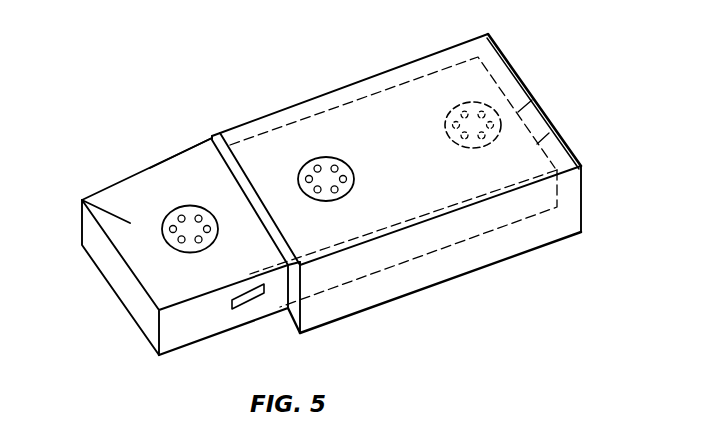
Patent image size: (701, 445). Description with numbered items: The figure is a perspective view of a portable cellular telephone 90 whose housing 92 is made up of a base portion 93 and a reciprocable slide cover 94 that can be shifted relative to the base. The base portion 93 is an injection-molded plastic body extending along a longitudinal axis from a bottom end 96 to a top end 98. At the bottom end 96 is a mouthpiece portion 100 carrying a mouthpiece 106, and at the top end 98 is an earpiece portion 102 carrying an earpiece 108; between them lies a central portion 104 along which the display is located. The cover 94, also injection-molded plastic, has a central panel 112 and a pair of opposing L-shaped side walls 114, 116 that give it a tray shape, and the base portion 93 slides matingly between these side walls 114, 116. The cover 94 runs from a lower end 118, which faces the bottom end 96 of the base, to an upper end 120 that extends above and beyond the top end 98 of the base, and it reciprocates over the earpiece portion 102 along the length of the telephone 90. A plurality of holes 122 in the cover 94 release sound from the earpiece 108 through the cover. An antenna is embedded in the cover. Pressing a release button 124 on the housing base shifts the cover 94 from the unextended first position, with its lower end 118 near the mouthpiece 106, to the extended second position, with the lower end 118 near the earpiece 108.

The portable cellular telephone 90 is at (323, 194).
The housing 92 is at (190, 156).
The base portion 93 is at (97, 192).
The slide cover 94 is at (325, 95).
The bottom end 96 is at (138, 307).
The top end 98 is at (542, 96).
The mouthpiece portion 100 is at (128, 232).
The earpiece portion 102 is at (557, 132).
The central portion 104 is at (262, 248).
The mouthpiece 106 is at (188, 206).
The earpiece 108 is at (455, 111).
The central panel 112 is at (397, 149).
The L-shaped side wall 114 is at (427, 275).
The L-shaped side wall 116 is at (248, 173).
The lower end 118 is at (248, 186).
The upper end 120 is at (513, 64).
The holes 122 is at (355, 179).
The release button 124 is at (250, 300).